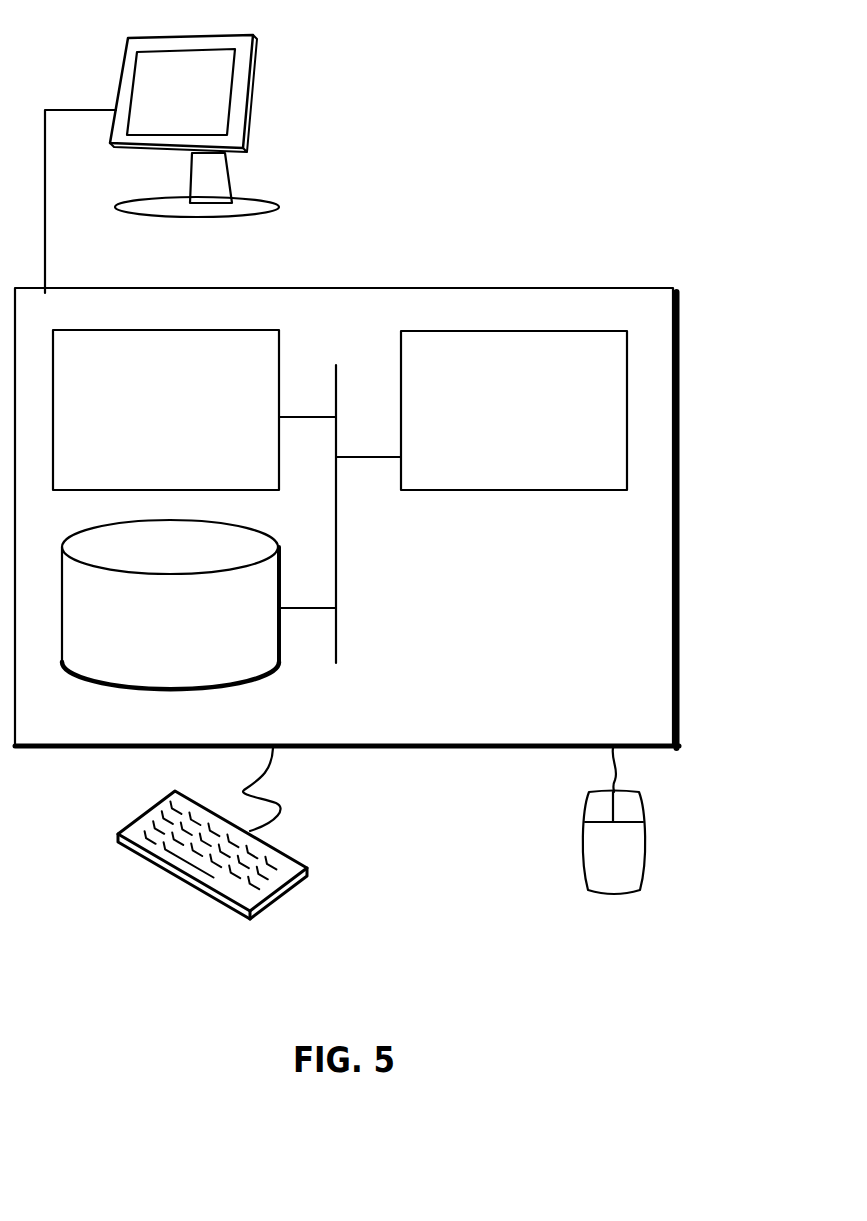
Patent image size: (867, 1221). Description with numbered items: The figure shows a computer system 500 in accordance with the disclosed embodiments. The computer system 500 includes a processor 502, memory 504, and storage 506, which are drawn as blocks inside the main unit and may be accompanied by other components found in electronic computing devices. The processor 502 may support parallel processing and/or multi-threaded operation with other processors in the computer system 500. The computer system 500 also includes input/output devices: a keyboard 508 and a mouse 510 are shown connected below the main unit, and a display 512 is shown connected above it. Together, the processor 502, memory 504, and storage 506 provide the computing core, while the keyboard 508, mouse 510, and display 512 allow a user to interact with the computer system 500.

The computer system 500 is at (391, 267).
The processor 502 is at (537, 424).
The memory 504 is at (187, 422).
The storage 506 is at (193, 634).
The keyboard 508 is at (135, 857).
The mouse 510 is at (633, 864).
The display 512 is at (162, 164).